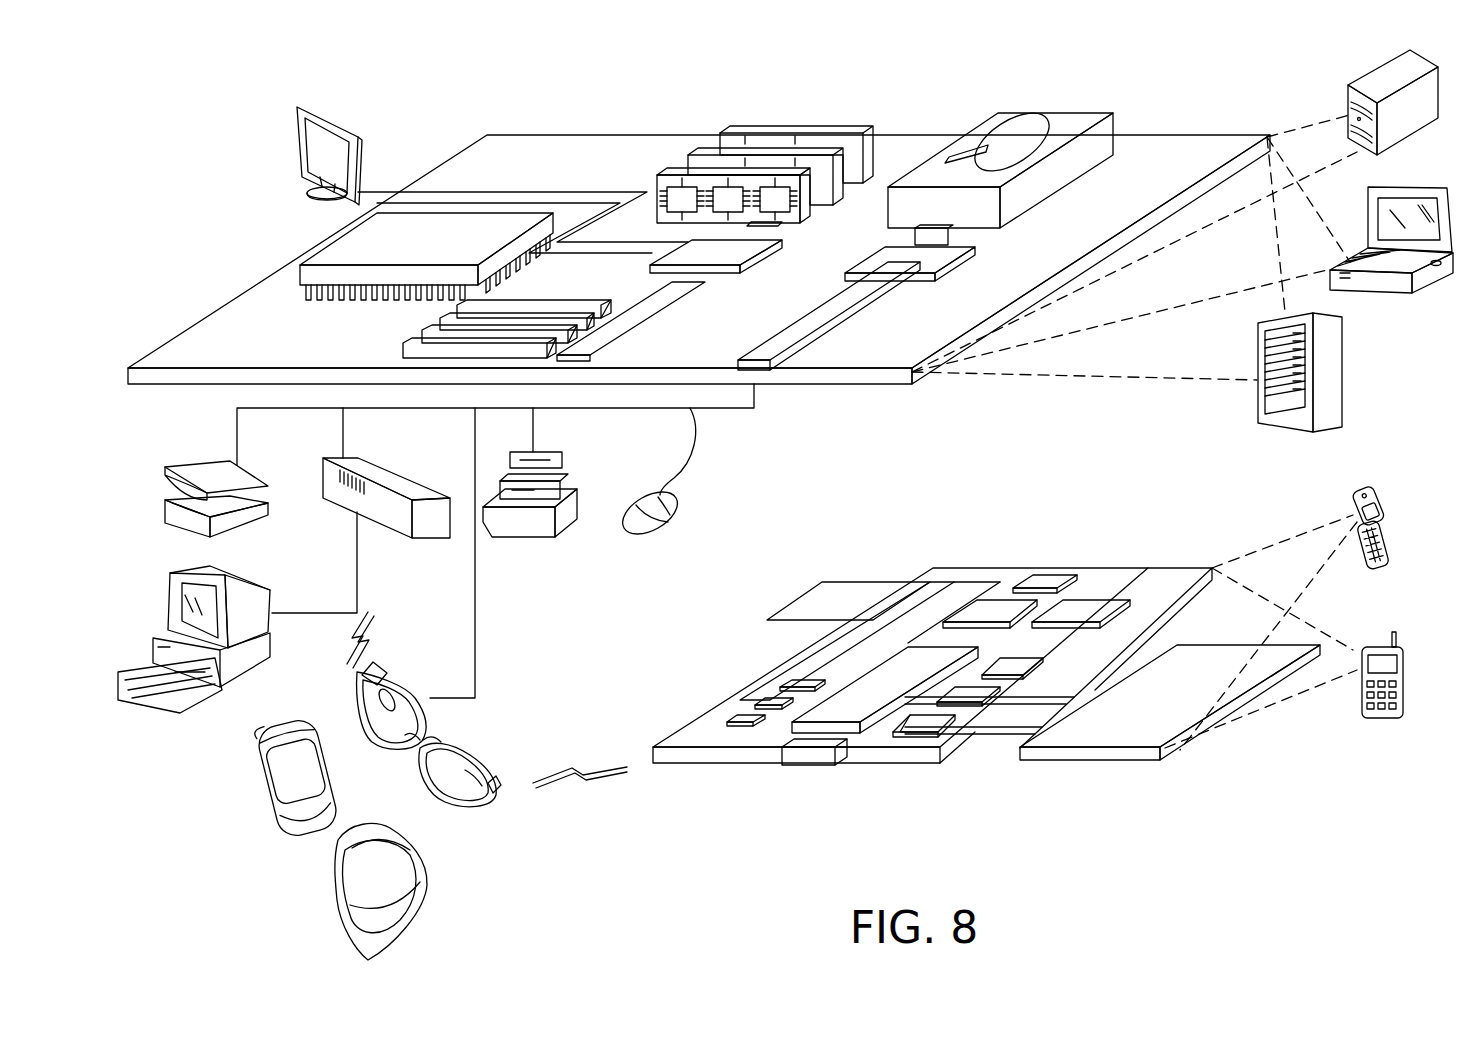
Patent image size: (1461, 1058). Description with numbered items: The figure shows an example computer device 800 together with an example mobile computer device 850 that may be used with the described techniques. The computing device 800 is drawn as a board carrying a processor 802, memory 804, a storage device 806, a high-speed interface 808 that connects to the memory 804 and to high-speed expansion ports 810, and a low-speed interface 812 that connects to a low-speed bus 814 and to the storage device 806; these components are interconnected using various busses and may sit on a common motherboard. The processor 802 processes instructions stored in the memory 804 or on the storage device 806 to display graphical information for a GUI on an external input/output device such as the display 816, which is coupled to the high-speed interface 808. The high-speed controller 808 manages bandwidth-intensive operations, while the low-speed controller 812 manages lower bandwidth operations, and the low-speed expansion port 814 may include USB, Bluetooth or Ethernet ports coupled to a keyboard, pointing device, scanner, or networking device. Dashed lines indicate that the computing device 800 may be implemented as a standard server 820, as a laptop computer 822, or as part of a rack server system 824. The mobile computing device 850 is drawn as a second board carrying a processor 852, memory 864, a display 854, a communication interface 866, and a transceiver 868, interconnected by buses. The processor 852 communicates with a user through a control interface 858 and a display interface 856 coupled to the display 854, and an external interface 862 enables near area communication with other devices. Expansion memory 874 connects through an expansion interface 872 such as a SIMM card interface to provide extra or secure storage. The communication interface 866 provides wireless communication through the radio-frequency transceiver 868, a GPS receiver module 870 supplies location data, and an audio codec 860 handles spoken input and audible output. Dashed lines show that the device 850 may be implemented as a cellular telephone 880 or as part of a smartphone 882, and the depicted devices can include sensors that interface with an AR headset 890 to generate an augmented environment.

The computing device 800 is at (435, 76).
The processor 802 is at (323, 248).
The memory 804 is at (800, 128).
The storage device 806 is at (1045, 110).
The high-speed interface 808 is at (730, 252).
The high-speed expansion ports 810 is at (432, 330).
The low-speed interface 812 is at (880, 258).
The low-speed expansion port 814 is at (760, 356).
The display 816 is at (300, 103).
The standard server 820 is at (1368, 80).
The laptop computer 822 is at (1425, 183).
The rack server system 824 is at (1347, 372).
The mobile computer device 850 is at (698, 650).
The processor 852 is at (847, 700).
The display 854 is at (1210, 660).
The display interface 856 is at (935, 725).
The control interface 858 is at (975, 695).
The audio codec 860 is at (1012, 660).
The external interface 862 is at (810, 745).
The memory 864 is at (757, 695).
The communication interface 866 is at (990, 600).
The transceiver 868 is at (1085, 600).
The GPS receiver module 870 is at (1045, 575).
The expansion interface 872 is at (913, 582).
The expansion memory 874 is at (820, 582).
The cellular telephone 880 is at (1367, 490).
The smartphone 882 is at (1375, 645).
The AR headset/HMD device 890 is at (480, 818).